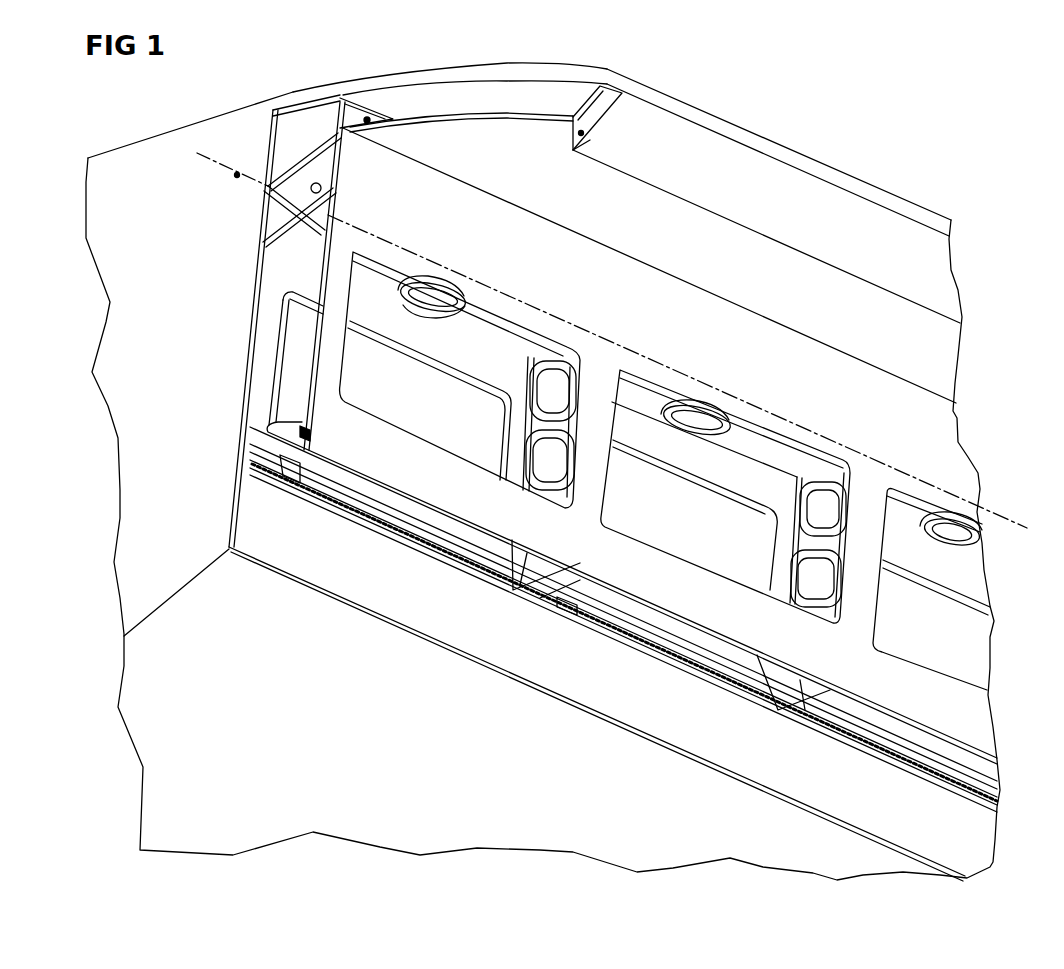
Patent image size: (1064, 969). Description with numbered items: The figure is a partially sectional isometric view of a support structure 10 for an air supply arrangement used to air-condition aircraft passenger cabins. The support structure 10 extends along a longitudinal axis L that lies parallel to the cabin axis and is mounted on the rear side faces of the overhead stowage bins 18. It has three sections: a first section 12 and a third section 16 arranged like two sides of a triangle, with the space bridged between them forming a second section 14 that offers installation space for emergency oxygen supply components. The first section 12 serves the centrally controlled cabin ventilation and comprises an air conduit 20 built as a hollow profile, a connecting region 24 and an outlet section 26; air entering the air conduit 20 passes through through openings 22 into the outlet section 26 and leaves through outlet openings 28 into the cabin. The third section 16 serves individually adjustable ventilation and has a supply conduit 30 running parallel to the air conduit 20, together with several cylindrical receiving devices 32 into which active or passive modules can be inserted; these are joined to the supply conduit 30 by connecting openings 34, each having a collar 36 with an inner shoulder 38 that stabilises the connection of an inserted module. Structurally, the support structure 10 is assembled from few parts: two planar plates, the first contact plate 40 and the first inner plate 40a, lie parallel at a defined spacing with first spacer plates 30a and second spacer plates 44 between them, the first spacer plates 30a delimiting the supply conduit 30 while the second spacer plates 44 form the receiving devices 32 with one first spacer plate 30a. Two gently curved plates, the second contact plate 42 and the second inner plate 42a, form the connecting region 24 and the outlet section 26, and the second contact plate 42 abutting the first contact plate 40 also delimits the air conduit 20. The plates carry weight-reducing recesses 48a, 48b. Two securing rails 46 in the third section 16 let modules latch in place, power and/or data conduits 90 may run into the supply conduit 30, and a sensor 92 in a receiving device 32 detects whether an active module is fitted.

The support structure 10 is at (918, 148).
The first section 12 is at (327, 78).
The second section 14 is at (932, 368).
The third section 16 is at (243, 362).
The overhead stowage bins 18 is at (110, 167).
The air conduit 20 is at (317, 117).
The through openings 22 is at (368, 115).
The connecting region 24 is at (483, 100).
The outlet section 26 is at (597, 103).
The outlet openings 28 is at (573, 132).
The supply conduit 30 is at (266, 196).
The first spacer plates 30a is at (273, 177).
The receiving devices 32 is at (420, 570).
The connecting openings 34 is at (430, 292).
The collar 36 is at (392, 262).
The inner shoulder 38 is at (420, 317).
The first contact plate 40 is at (733, 667).
The first inner plate 40a is at (733, 337).
The second contact plate 42 is at (537, 83).
The second inner plate 42a is at (687, 220).
The second spacer plates 44 is at (560, 417).
The securing rails 46 is at (300, 430).
The recesses 48a is at (460, 393).
The recesses 48b is at (823, 580).
The power and/or data conduits 90 is at (237, 176).
The sensor 92 is at (297, 462).
The longitudinal axis L is at (990, 520).